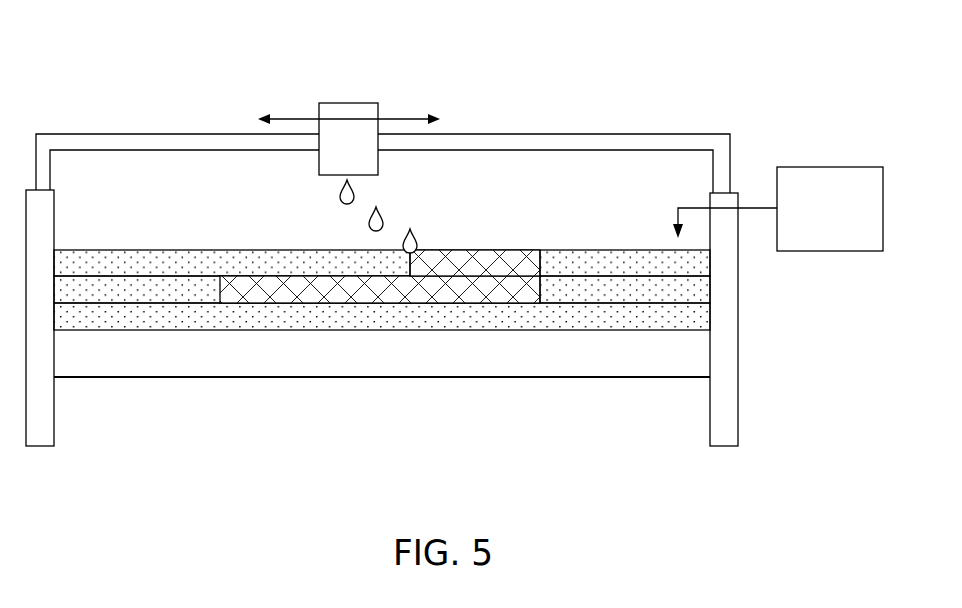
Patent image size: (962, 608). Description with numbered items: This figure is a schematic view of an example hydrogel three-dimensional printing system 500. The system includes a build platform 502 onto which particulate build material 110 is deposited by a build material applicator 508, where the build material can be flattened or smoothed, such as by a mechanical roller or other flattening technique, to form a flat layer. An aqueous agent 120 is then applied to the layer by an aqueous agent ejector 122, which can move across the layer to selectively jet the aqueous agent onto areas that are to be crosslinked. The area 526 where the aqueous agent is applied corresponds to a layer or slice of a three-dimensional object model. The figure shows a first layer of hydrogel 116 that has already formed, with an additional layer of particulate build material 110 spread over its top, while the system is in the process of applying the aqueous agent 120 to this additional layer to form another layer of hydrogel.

The hydrogel three-dimensional printing system 500 is at (145, 48).
The particulate build material 110 is at (124, 284).
The first layer of hydrogel 116 is at (345, 290).
The area where the aqueous agent is applied 526 is at (453, 263).
The build platform 502 is at (547, 362).
The aqueous agent 120 is at (340, 196).
The aqueous agent ejector 122 is at (349, 139).
The build material applicator 508 is at (778, 209).